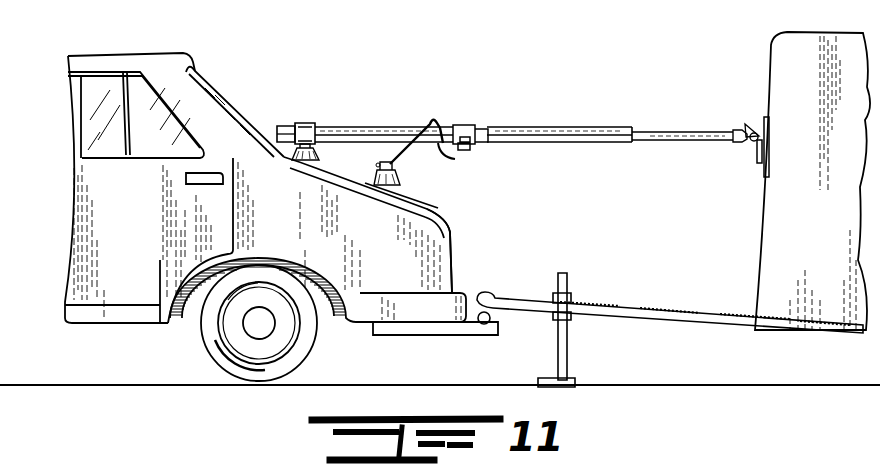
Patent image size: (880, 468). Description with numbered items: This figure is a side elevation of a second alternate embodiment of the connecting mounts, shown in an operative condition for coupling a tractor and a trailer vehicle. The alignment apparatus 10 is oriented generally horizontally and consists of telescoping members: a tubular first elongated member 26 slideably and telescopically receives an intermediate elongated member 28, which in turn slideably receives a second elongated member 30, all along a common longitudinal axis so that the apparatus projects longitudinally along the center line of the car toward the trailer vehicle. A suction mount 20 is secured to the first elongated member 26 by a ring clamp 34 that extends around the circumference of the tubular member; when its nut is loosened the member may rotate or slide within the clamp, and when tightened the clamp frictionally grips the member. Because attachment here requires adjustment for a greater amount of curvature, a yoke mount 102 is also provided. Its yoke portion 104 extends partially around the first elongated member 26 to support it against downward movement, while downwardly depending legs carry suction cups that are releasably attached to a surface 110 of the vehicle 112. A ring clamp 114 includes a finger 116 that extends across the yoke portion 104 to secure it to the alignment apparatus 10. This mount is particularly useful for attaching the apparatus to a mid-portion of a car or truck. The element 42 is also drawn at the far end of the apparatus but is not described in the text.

The alignment apparatus 10 is at (518, 133).
The suction mount 20 is at (317, 152).
The first elongated member 26 is at (340, 127).
The intermediate elongated member 28 is at (527, 127).
The second elongated member 30 is at (680, 132).
The ring clamp 34 is at (300, 123).
The bracket 42 is at (750, 119).
The yoke mount 102 is at (437, 166).
The yoke portion 104 is at (432, 117).
The surface 110 is at (414, 187).
The vehicle 112 is at (445, 212).
The ring clamp 114 is at (460, 125).
The finger 116 is at (455, 159).